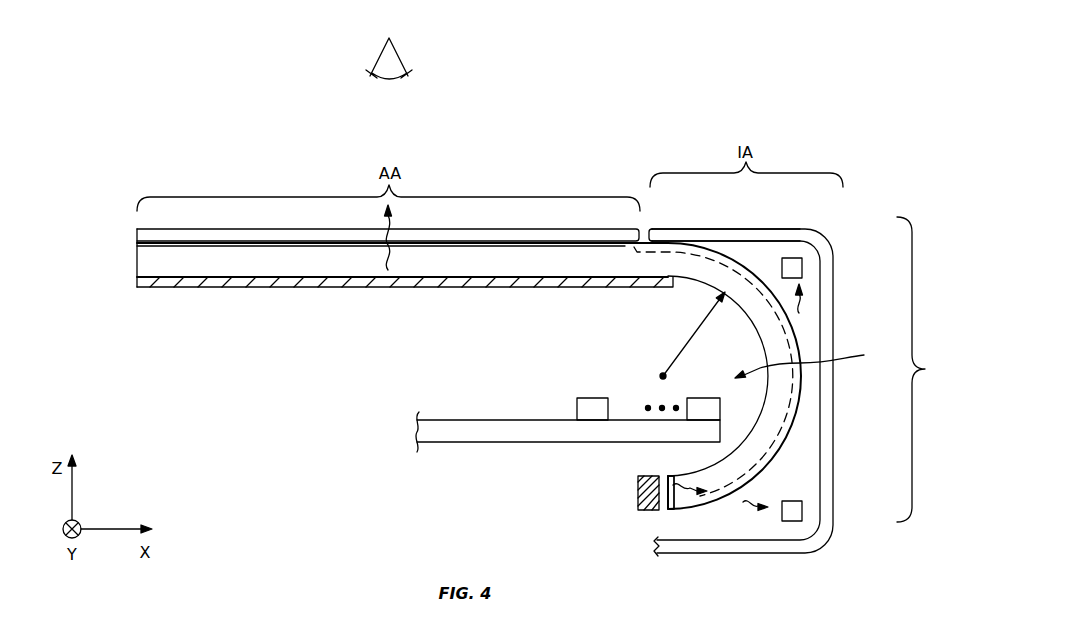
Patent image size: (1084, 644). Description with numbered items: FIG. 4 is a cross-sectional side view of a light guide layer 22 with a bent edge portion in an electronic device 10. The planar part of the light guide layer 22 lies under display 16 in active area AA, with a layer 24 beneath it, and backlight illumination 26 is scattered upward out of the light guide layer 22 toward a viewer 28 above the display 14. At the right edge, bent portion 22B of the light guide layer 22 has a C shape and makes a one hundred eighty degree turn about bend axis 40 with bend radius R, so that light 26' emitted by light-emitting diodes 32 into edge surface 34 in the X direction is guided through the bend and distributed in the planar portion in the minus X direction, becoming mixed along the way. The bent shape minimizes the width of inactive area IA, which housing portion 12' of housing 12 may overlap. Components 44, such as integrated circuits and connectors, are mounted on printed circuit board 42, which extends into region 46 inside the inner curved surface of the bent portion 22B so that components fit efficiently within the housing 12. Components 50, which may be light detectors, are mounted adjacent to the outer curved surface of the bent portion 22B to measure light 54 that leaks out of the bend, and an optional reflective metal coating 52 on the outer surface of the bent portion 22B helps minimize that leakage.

The device 10 is at (923, 369).
The housing 12 is at (768, 392).
The housing portion 12' is at (726, 212).
The display 14 is at (546, 162).
The display 16 is at (149, 234).
The light guide layer 22 is at (149, 260).
The bent portion 22B is at (779, 406).
The support layer 24 is at (240, 288).
The backlight illumination 26 is at (415, 237).
The light 26' is at (706, 536).
The viewer 28 is at (398, 55).
The light-emitting diodes 32 is at (637, 492).
The edge surface 34 is at (677, 500).
The bend axis 40 is at (660, 373).
The printed circuit board 42 is at (526, 438).
The components 44 is at (591, 397).
The region 46 is at (810, 363).
The components 50 is at (806, 267).
The metal coating 52 is at (742, 262).
The light 54 is at (803, 297).